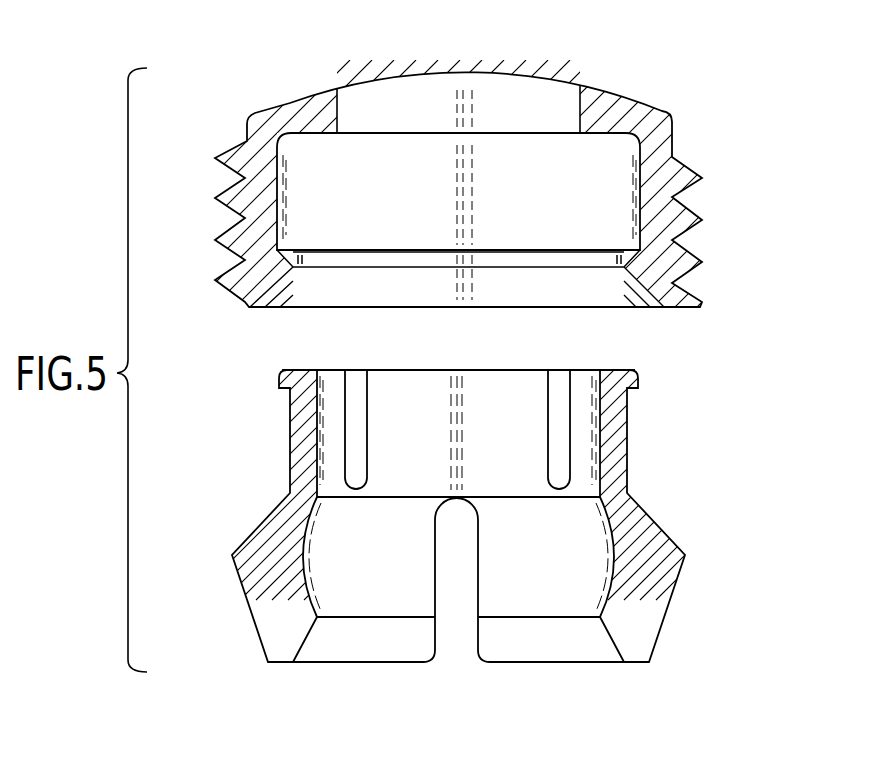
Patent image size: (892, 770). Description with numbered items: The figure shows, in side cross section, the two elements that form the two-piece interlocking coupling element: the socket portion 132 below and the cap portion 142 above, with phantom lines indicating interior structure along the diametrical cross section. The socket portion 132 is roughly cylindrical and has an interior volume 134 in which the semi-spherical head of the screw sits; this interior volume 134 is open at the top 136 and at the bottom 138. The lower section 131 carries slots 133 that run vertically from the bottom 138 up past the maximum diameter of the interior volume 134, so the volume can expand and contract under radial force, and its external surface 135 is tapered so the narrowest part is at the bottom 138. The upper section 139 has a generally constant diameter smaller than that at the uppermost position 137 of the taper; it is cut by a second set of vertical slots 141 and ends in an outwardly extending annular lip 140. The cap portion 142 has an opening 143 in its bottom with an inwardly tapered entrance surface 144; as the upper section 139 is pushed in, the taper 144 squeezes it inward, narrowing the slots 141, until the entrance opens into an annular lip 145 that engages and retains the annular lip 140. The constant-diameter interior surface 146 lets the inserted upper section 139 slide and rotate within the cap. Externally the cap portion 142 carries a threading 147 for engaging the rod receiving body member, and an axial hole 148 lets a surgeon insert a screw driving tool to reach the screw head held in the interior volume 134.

The lower section 131 is at (253, 617).
The socket portion 132 is at (652, 467).
The slots 133 is at (450, 558).
The interior volume 134 is at (560, 579).
The external surface 135 is at (662, 618).
The top 136 is at (462, 388).
The uppermost position of the taper 137 is at (686, 556).
The bottom 138 is at (556, 663).
The upper section 139 is at (290, 432).
The annular lip 140 is at (637, 378).
The vertical slots 141 is at (558, 388).
The cap portion 142 is at (676, 100).
The opening 143 is at (588, 300).
The inwardly tapered entrance surface 144 is at (283, 282).
The annular lip 145 is at (627, 254).
The interior surface 146 is at (280, 191).
The threading 147 is at (215, 158).
The axial hole 148 is at (528, 103).